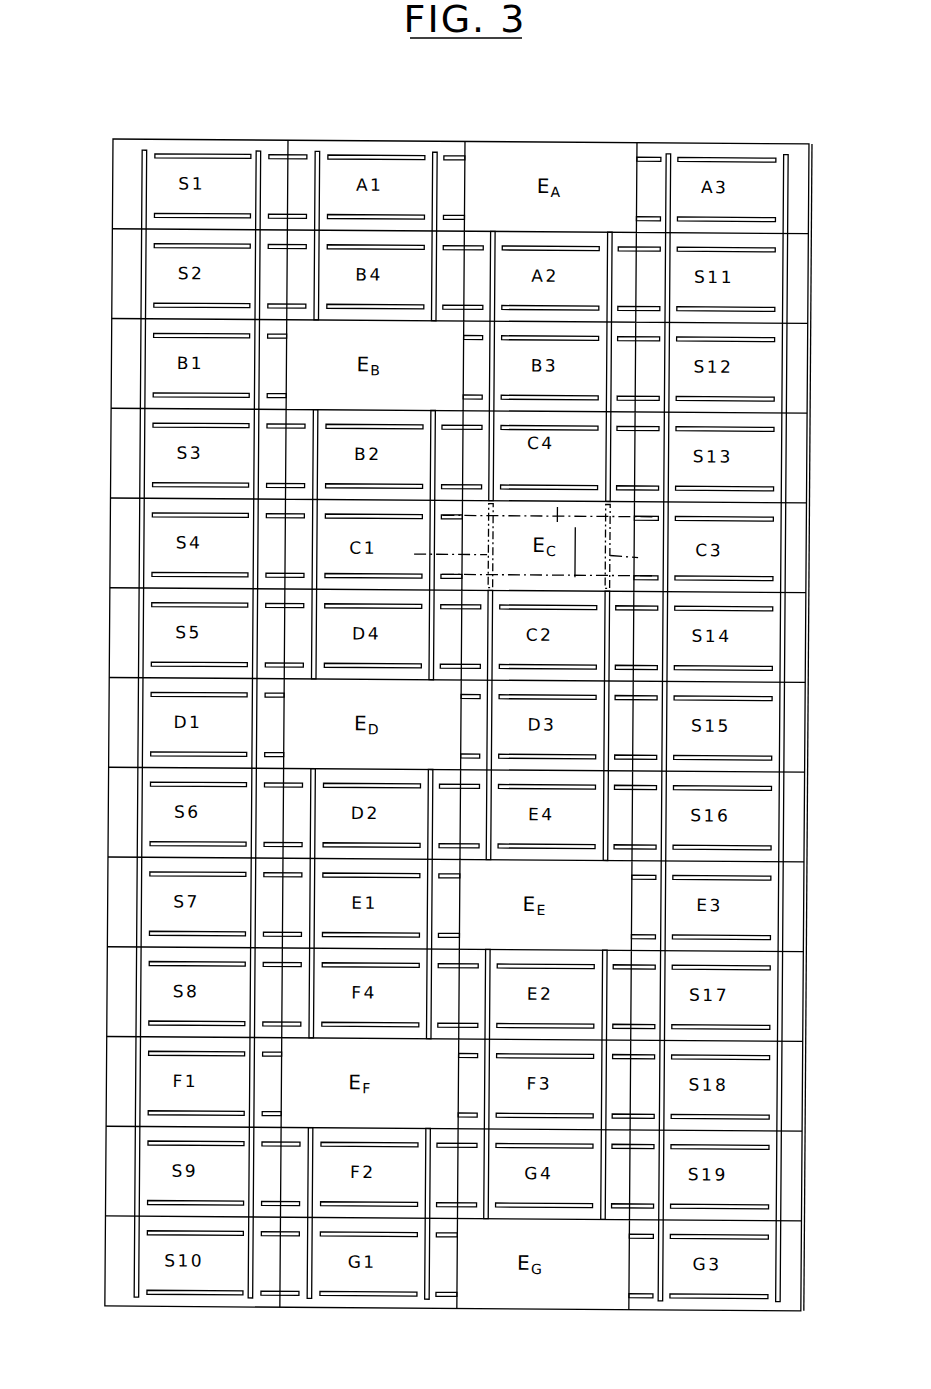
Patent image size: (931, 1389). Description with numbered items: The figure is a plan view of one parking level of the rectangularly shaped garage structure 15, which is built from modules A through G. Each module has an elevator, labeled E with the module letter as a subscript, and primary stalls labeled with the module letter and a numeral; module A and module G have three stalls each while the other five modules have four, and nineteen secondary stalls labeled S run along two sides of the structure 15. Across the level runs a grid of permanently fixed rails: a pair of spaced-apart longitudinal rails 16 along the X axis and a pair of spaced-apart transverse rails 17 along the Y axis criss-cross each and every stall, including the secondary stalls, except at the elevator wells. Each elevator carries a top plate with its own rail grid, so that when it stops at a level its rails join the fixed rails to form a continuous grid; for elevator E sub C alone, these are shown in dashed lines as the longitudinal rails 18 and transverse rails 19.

The garage structure 15 is at (813, 337).
The longitudinal rails 16 is at (764, 339).
The transverse rails 17 is at (605, 856).
The longitudinal rails of the elevator 18 is at (620, 619).
The transverse rails of the elevator 19 is at (491, 582).